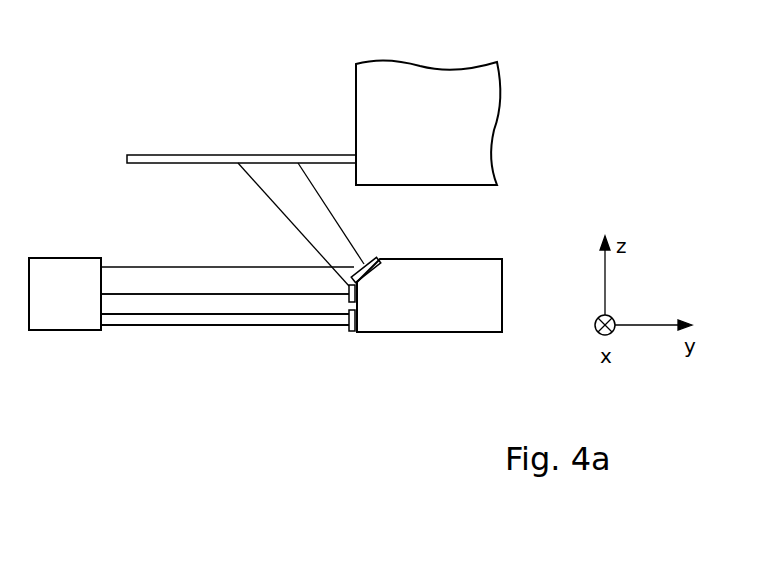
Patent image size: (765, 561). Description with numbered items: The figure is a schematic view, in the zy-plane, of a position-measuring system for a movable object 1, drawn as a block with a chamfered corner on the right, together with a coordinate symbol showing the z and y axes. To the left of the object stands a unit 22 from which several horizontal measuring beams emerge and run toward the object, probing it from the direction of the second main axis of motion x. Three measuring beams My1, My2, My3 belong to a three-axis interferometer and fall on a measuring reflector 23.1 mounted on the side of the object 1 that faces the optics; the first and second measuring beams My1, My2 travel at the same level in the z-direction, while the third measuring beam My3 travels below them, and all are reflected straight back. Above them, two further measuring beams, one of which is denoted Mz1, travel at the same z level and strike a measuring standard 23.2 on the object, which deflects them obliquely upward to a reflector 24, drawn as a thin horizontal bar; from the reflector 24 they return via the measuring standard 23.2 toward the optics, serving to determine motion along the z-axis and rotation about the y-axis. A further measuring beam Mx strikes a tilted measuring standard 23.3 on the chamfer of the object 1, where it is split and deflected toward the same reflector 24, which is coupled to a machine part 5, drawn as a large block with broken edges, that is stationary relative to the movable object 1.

The object 1 is at (484, 332).
The machine part 5 is at (488, 100).
The interferometer unit 22 is at (55, 326).
The measuring reflector 23.1 is at (352, 335).
The measuring standard 23.2 is at (357, 298).
The measuring standard 23.3 is at (378, 260).
The reflector 24 is at (140, 157).
The measuring beam Mx is at (236, 265).
The first z measuring beam Mz1 is at (148, 293).
The first measuring beam My1 is at (130, 326).
The second measuring beam My2 is at (225, 319).
The third measuring beam My3 is at (270, 327).